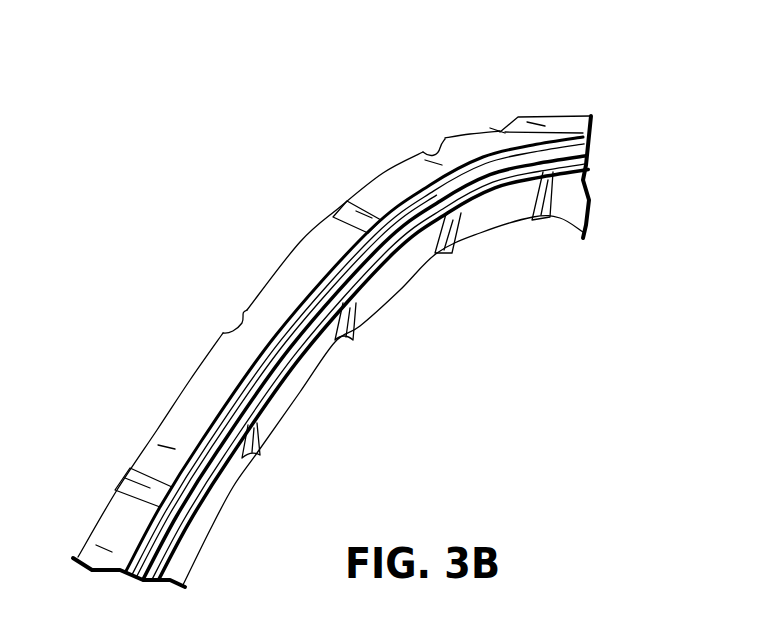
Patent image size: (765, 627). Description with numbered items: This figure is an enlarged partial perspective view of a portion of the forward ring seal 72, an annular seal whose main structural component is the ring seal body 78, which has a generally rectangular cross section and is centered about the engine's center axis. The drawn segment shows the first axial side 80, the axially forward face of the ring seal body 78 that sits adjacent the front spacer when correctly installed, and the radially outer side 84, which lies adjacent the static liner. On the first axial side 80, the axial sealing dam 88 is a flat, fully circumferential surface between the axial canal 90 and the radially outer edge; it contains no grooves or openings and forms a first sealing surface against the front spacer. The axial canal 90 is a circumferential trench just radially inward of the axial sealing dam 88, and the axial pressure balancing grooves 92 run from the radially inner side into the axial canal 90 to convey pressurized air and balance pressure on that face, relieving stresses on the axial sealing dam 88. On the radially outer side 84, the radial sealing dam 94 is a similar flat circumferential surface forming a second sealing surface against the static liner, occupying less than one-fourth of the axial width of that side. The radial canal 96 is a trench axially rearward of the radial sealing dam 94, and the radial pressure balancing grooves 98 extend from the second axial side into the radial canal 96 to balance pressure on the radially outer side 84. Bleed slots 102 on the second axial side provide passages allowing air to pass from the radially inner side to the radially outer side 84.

The forward ring seal 72 is at (228, 220).
The ring seal body 78 is at (192, 383).
The first axial side 80 is at (293, 387).
The radially outer side 84 is at (405, 182).
The axial sealing dam 88 is at (588, 160).
The axial canal 90 is at (392, 265).
The axial pressure balancing grooves 92 is at (343, 330).
The radial sealing dam 94 is at (335, 292).
The radial canal 96 is at (483, 155).
The radial pressure balancing grooves 98 is at (353, 200).
The bleed slots 102 is at (434, 146).